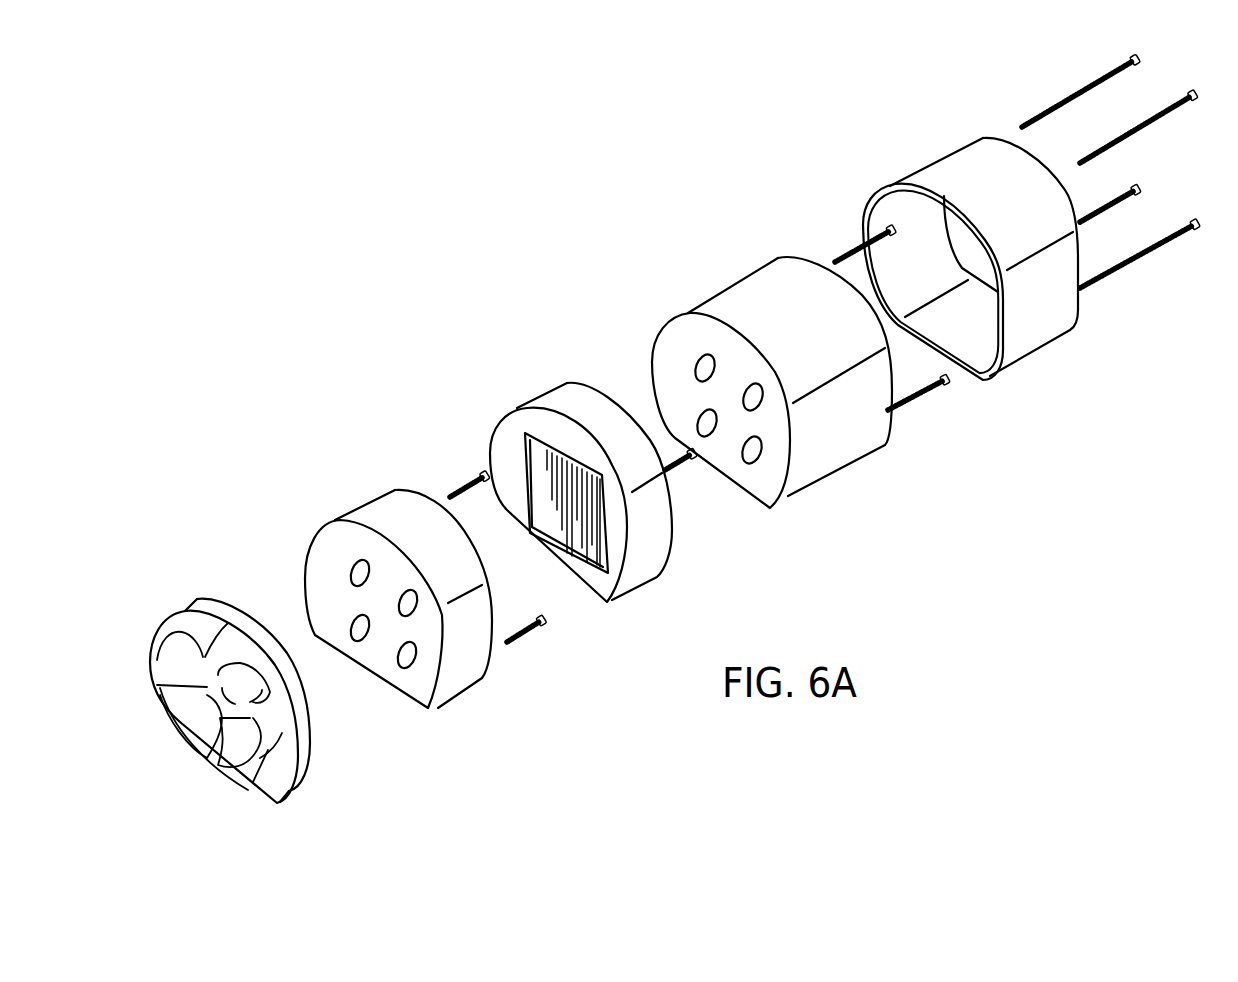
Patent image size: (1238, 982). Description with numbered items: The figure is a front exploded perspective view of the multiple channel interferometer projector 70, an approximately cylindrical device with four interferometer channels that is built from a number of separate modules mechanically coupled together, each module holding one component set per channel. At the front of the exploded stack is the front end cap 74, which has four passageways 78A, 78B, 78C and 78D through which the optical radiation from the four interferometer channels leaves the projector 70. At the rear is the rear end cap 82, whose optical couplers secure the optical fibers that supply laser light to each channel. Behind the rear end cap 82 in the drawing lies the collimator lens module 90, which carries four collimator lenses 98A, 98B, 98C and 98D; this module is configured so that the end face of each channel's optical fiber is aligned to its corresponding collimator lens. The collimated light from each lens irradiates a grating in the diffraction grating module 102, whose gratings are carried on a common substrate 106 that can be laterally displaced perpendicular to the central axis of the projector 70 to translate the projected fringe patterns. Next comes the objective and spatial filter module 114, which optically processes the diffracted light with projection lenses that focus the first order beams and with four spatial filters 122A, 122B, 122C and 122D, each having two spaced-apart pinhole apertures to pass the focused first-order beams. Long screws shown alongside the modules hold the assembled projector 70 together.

The multiple channel interferometer projector 70 is at (421, 250).
The front end cap 74 is at (151, 599).
The passageway 78A is at (168, 660).
The passageway 78B is at (189, 727).
The passageway 78C is at (263, 705).
The passageway 78D is at (243, 766).
The rear end cap 82 is at (890, 122).
The collimator lens module 90 is at (684, 229).
The collimator lens 98A is at (705, 355).
The collimator lens 98B is at (708, 437).
The collimator lens 98C is at (762, 390).
The collimator lens 98D is at (767, 452).
The diffraction grating module 102 is at (511, 366).
The common substrate 106 is at (598, 522).
The objective and spatial filter module 114 is at (333, 475).
The spatial filter 122A is at (348, 574).
The spatial filter 122B is at (355, 640).
The spatial filter 122C is at (405, 594).
The spatial filter 122D is at (414, 667).